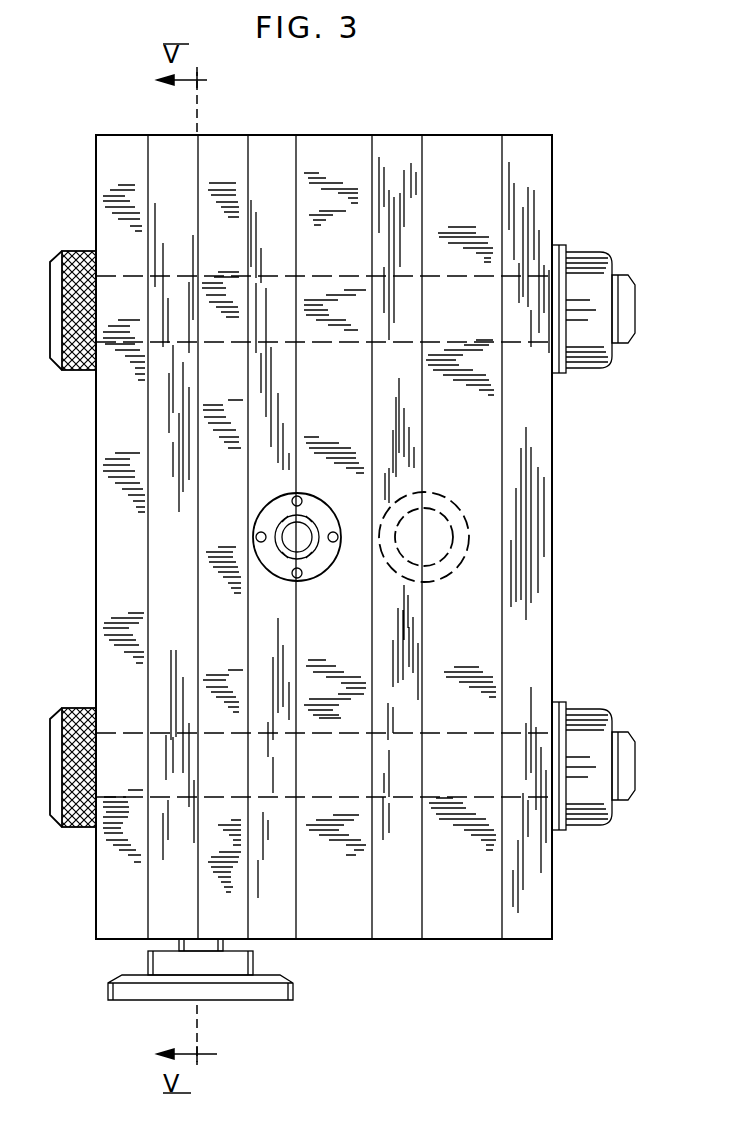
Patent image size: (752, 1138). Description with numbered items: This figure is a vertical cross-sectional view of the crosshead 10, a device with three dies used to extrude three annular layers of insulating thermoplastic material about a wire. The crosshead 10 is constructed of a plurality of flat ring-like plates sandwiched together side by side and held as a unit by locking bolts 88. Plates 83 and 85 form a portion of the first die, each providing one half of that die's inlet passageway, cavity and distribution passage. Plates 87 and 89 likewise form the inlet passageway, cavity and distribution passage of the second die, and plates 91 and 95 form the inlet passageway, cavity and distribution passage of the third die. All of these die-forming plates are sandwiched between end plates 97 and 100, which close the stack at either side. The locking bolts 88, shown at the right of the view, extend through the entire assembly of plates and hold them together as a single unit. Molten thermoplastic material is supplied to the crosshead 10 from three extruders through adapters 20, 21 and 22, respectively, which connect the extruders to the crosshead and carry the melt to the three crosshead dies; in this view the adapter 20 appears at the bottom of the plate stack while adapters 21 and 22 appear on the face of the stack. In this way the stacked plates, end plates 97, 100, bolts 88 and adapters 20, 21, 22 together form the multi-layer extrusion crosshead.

The crosshead 10 is at (575, 137).
The adapter 20 is at (235, 962).
The adapter 21 is at (305, 553).
The adapter 22 is at (433, 555).
The plate 83 is at (168, 155).
The plate 85 is at (218, 152).
The plate 87 is at (270, 150).
The locking bolt 88 is at (620, 283).
The plate 89 is at (330, 155).
The plate 91 is at (398, 148).
The plate 95 is at (462, 157).
The end plate 97 is at (112, 158).
The end plate 100 is at (523, 150).